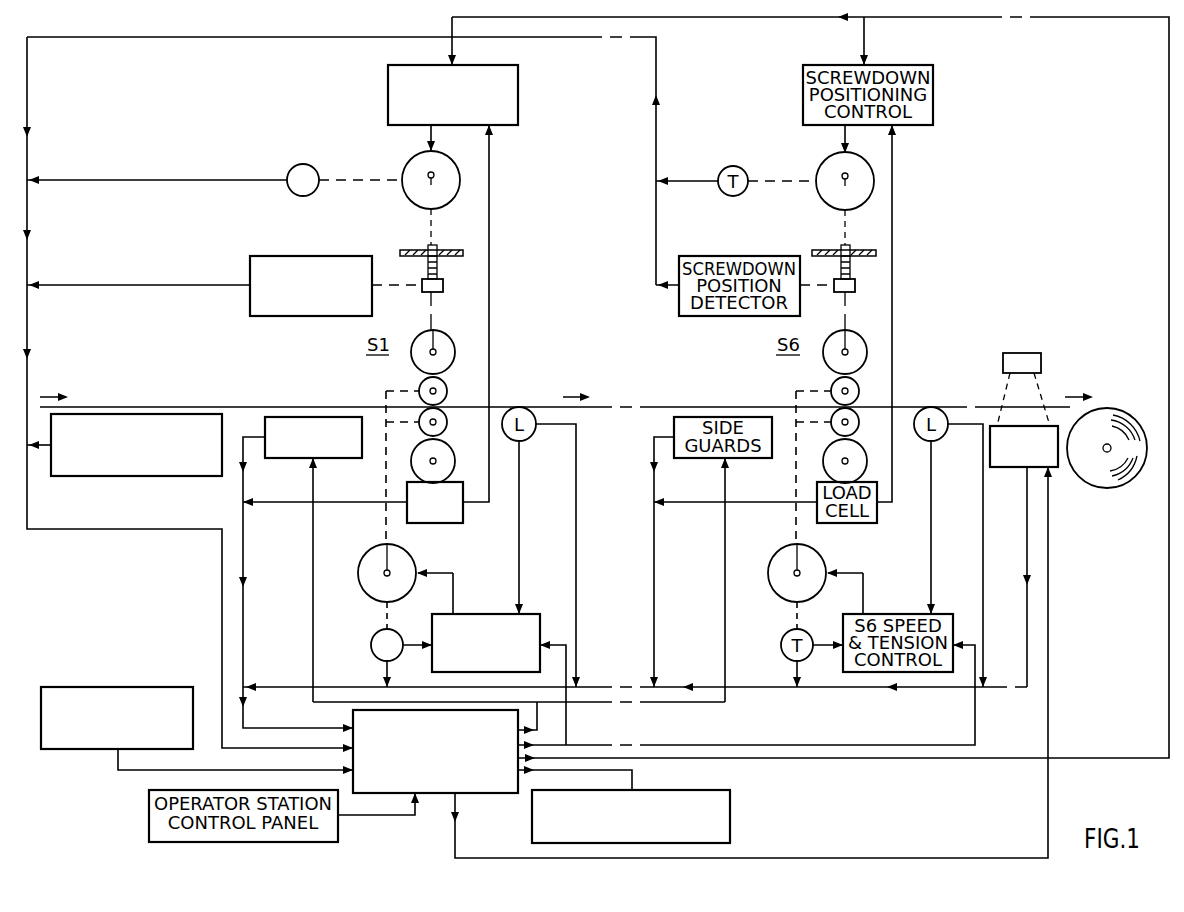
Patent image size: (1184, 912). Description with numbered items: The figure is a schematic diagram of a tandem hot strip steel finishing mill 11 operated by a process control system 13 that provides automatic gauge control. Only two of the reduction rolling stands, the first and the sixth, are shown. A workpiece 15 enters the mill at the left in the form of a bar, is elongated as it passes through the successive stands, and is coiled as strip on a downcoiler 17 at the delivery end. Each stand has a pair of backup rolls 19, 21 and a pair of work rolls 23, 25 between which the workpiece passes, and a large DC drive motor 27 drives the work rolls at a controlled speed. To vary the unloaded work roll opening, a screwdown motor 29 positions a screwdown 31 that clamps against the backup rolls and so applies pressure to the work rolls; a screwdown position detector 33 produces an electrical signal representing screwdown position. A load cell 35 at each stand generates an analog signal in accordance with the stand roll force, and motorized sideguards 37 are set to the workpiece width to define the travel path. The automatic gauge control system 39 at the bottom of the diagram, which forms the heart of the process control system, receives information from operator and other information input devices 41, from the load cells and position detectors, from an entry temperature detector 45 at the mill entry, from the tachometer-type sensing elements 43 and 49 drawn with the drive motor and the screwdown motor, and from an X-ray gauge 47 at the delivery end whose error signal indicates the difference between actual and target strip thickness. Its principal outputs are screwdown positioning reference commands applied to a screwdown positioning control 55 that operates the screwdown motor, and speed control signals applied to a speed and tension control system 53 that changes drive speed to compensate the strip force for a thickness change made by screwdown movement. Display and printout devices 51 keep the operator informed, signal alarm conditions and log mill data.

The tandem hot strip steel finishing mill 11 is at (555, 375).
The process control system 13 is at (415, 775).
The workpiece 15 is at (165, 407).
The downcoiler 17 is at (1095, 488).
The backup roll 19 is at (443, 333).
The backup roll 21 is at (453, 451).
The work roll 23 is at (446, 386).
The work roll 25 is at (446, 424).
The DC drive motor 27 is at (367, 551).
The screwdown motor 29 is at (403, 168).
The screwdown 31 is at (428, 248).
The screwdown position detector 33 is at (355, 256).
The load cell 35 is at (448, 523).
The sideguards 37 is at (293, 458).
The automatic gauge control system box 39 is at (353, 716).
The information input devices 41 is at (128, 687).
The tachometer 43 is at (377, 632).
The mill entry temperature detector 45 is at (120, 476).
The X-ray gauge 47 is at (1020, 467).
The screwdown tachometer 49 is at (312, 165).
The display and printout devices 51 is at (720, 790).
The speed and tension control system 53 is at (520, 614).
The screwdown positioning control 55 is at (518, 98).